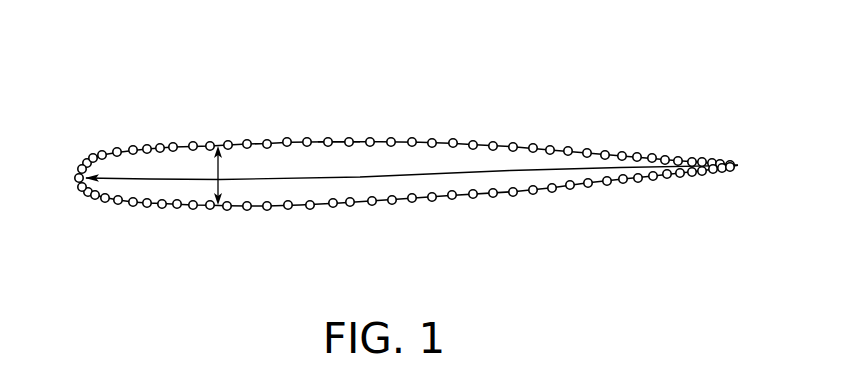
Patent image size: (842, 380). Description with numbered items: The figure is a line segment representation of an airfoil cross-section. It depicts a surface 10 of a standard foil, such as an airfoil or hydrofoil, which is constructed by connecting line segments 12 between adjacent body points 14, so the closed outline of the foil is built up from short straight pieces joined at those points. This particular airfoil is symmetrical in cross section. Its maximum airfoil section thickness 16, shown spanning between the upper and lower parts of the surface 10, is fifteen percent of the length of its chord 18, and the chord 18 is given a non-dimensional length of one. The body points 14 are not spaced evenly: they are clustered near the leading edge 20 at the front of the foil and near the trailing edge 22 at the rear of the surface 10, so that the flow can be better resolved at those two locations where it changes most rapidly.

The surface 10 is at (464, 77).
The line segments 12 is at (338, 140).
The body points 14 is at (329, 138).
The maximum airfoil section thickness 16 is at (216, 167).
The chord 18 is at (357, 178).
The leading edge 20 is at (73, 182).
The trailing edge 22 is at (741, 165).